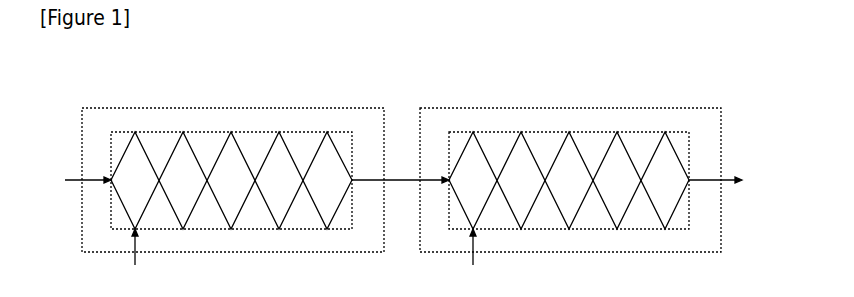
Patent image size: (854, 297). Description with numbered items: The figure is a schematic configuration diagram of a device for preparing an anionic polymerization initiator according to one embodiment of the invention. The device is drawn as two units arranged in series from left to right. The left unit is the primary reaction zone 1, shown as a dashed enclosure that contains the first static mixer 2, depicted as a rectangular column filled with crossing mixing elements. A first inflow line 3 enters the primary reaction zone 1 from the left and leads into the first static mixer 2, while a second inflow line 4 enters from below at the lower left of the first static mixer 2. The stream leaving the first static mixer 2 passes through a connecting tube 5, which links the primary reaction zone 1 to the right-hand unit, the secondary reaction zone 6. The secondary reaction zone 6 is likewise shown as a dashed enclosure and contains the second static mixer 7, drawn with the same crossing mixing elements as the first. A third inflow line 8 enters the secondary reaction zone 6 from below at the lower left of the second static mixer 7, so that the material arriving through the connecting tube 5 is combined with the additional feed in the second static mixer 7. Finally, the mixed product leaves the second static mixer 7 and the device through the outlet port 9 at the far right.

The primary reaction zone 1 is at (230, 108).
The first static mixer 2 is at (165, 132).
The first inflow line 3 is at (75, 179).
The second inflow line 4 is at (137, 242).
The connecting tube 5 is at (399, 178).
The secondary reaction zone 6 is at (565, 108).
The second static mixer 7 is at (490, 132).
The third inflow line 8 is at (475, 242).
The outlet port 9 is at (728, 178).